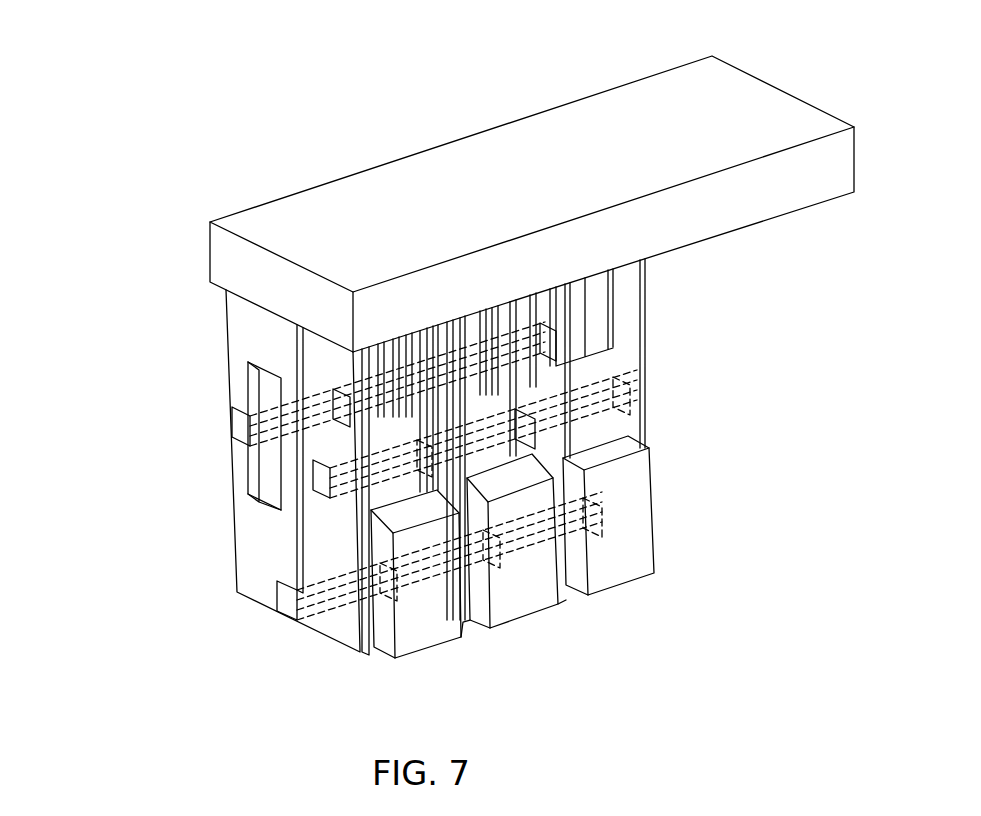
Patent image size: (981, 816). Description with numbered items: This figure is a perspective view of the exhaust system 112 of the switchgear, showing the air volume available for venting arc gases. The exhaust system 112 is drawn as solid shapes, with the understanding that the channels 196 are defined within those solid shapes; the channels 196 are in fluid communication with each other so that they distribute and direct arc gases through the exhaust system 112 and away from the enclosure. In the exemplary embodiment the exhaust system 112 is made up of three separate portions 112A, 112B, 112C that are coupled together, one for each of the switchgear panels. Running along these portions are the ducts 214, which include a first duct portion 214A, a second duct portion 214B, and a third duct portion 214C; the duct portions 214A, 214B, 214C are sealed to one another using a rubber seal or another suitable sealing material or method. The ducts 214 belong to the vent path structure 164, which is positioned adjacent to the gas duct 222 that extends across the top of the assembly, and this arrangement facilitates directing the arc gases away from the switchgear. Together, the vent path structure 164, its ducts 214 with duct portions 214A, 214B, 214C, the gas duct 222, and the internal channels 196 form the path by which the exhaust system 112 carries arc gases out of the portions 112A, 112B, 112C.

The exhaust system 112 is at (148, 60).
The gas duct 222 is at (305, 186).
The vent path structure 164 is at (226, 324).
The channels 196 is at (230, 460).
The ducts 214 is at (222, 416).
The first duct portion 214A is at (365, 508).
The second duct portion 214B is at (565, 468).
The third duct portion 214C is at (618, 417).
The first portion of exhaust system 112A is at (480, 653).
The second portion of exhaust system 112B is at (578, 622).
The third portion of exhaust system 112C is at (665, 593).